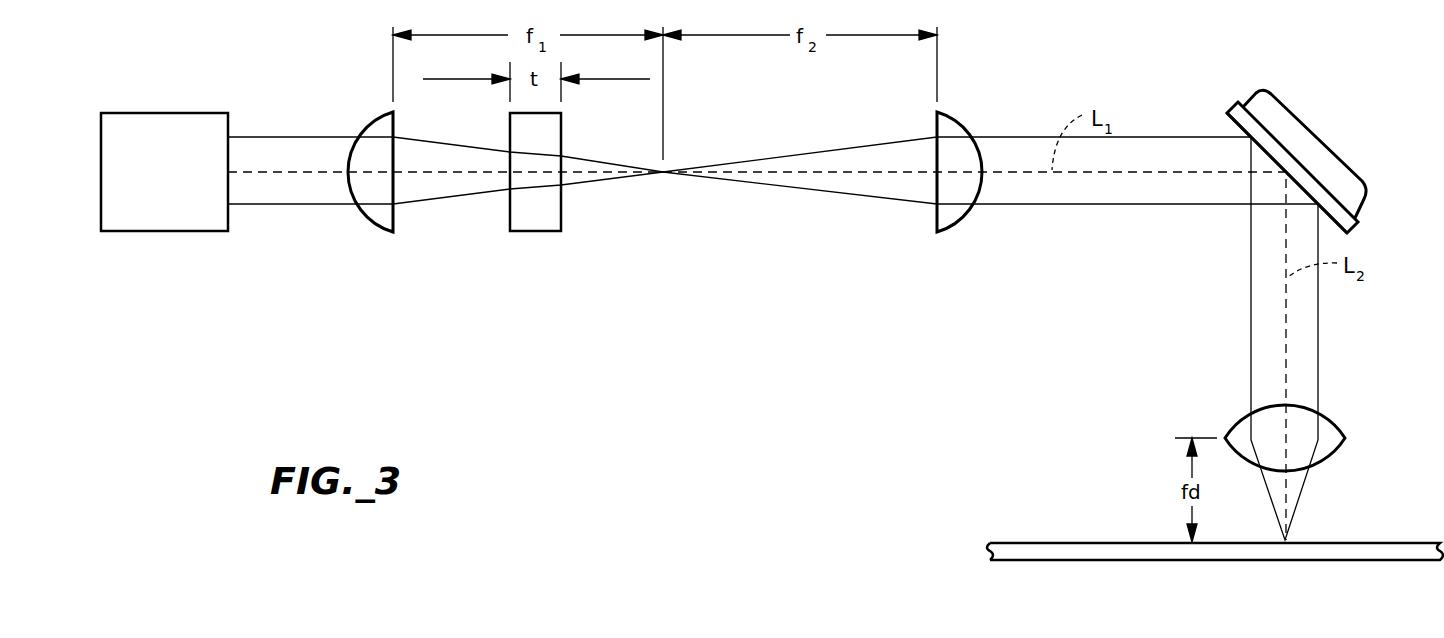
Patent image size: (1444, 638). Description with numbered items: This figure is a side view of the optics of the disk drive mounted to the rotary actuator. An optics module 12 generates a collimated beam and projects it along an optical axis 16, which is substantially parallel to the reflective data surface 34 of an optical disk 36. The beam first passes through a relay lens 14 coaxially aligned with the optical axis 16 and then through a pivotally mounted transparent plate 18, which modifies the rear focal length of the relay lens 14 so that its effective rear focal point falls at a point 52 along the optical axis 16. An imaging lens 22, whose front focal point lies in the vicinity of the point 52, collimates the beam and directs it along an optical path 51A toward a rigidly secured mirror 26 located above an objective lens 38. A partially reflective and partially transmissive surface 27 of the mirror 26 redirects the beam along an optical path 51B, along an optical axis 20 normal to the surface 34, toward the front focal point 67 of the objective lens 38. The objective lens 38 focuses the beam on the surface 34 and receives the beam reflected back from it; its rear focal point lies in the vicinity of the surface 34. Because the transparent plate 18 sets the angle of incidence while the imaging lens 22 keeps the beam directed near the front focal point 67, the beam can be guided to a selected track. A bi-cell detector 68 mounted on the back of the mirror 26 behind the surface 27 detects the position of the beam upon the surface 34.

The optics module 12 is at (152, 113).
The relay lens 14 is at (381, 228).
The optical axis 16 is at (312, 172).
The transparent plate 18 is at (543, 232).
The optical axis 20 is at (1292, 312).
The imaging lens 22 is at (942, 232).
The mirror 26 is at (1233, 103).
The partially reflective surface 27 is at (1235, 128).
The reflective data surface 34 is at (1062, 543).
The optical disk 36 is at (988, 552).
The objective lens 38 is at (1240, 422).
The optical path 51A is at (1013, 170).
The optical path 51B is at (1283, 298).
The point 52 is at (663, 178).
The front focal point 67 is at (1290, 387).
The bi-cell detector 68 is at (1303, 123).